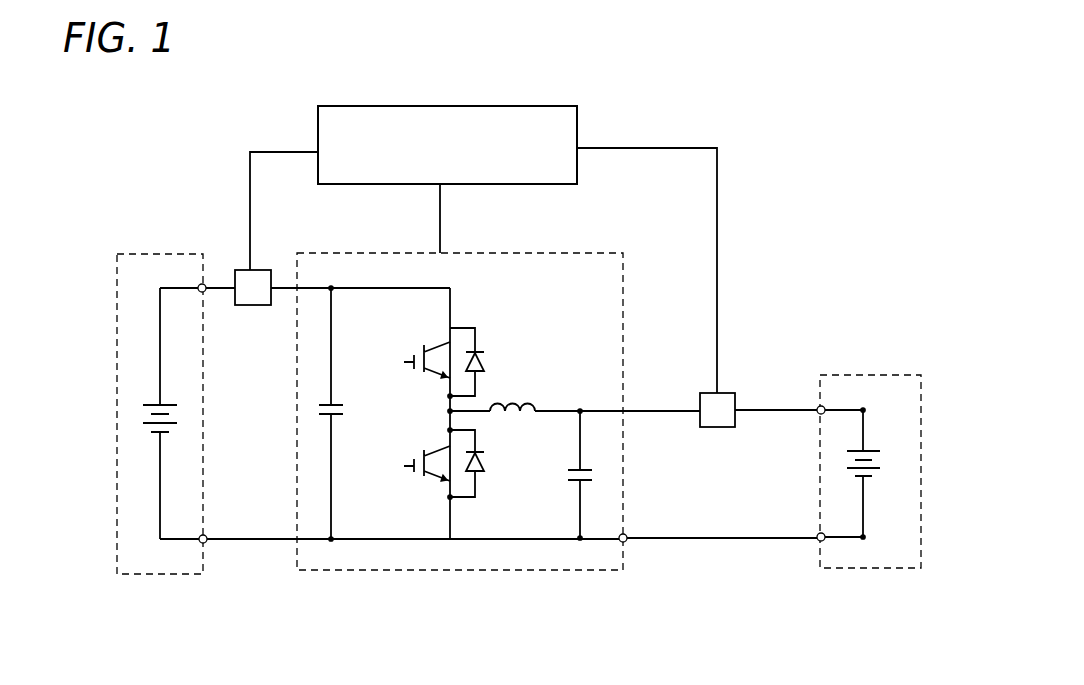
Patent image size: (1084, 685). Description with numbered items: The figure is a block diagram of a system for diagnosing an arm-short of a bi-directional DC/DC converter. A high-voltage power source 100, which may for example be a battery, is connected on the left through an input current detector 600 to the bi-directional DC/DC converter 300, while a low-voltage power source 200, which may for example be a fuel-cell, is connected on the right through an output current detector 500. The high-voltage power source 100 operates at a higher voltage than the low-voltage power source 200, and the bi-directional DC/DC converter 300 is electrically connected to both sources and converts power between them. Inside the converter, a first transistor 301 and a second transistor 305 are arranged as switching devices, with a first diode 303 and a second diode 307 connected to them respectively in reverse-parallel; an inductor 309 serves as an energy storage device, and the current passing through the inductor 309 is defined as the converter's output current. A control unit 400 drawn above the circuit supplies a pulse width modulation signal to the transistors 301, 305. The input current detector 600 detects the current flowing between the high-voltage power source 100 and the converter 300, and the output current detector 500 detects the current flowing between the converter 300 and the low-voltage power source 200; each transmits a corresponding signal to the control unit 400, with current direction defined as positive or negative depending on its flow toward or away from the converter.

The high-voltage power source 100 is at (158, 254).
The low-voltage power source 200 is at (898, 375).
The bi-directional DC/DC converter 300 is at (462, 386).
The transistor T1 301 is at (414, 356).
The diode D1 303 is at (482, 352).
The transistor T2 305 is at (413, 478).
The diode D2 307 is at (485, 470).
The inductor 309 is at (536, 410).
The control unit 400 is at (580, 121).
The output current detector 500 is at (728, 393).
The input current detector 600 is at (262, 270).